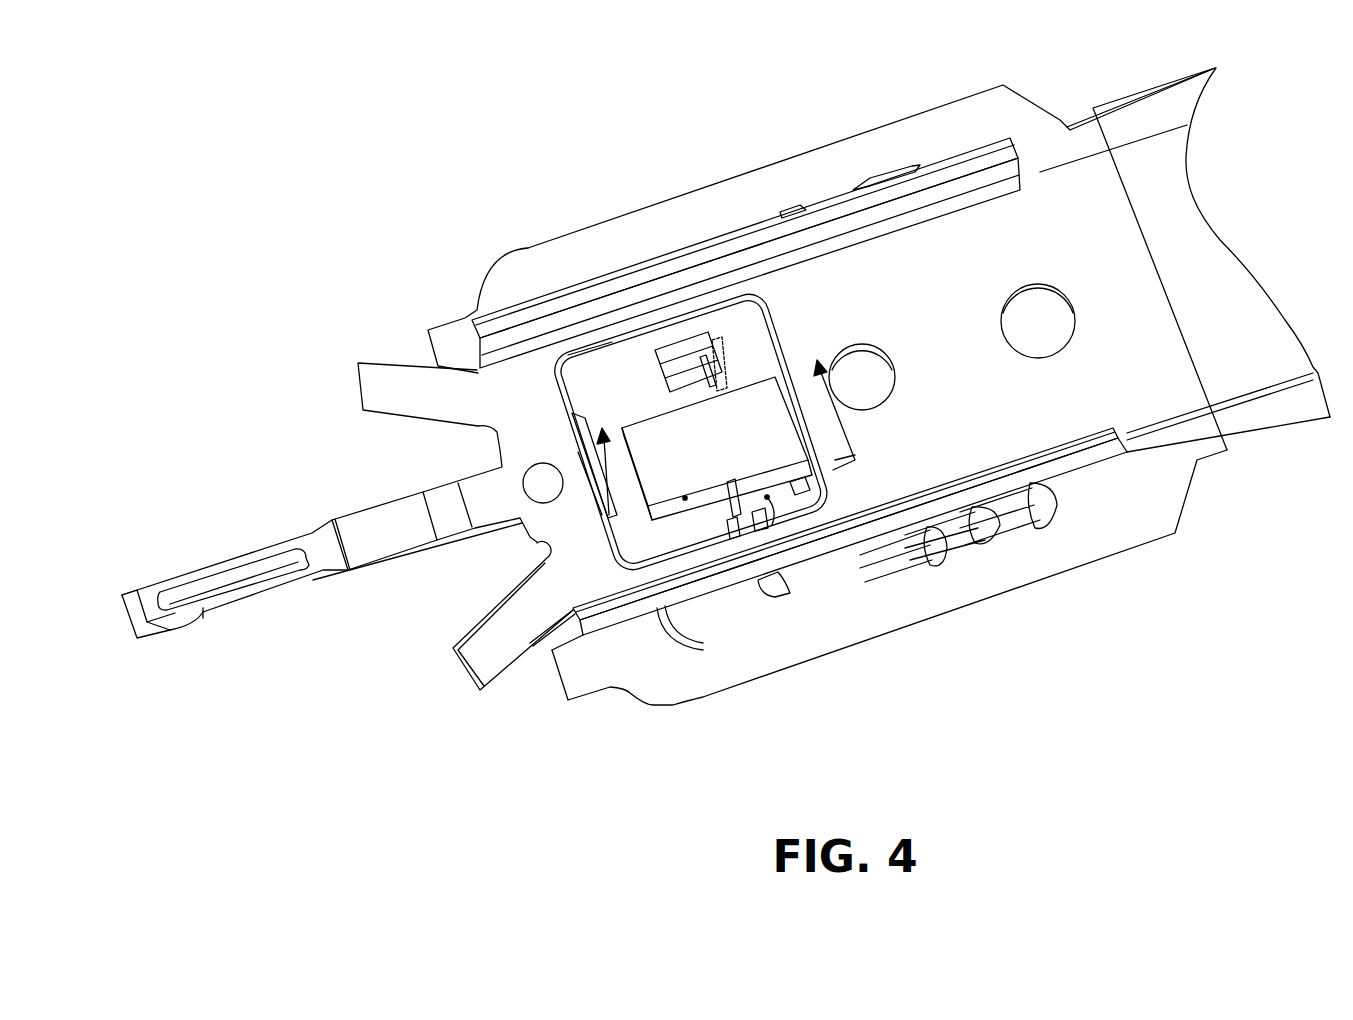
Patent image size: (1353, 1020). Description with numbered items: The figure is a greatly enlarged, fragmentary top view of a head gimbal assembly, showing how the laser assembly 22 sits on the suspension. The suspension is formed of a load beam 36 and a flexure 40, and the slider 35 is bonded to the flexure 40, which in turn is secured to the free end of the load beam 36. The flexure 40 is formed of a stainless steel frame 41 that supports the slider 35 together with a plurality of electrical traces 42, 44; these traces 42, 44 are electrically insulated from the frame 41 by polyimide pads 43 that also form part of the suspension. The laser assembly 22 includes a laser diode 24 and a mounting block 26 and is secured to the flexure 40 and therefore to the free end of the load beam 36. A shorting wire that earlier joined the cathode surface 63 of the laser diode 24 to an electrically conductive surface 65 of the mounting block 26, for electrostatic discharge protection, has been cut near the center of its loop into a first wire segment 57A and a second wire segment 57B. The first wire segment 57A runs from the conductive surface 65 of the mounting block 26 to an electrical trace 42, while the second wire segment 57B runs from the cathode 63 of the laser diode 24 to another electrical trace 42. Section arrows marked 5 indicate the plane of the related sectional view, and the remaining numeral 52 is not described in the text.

The section line 5- 5 is at (722, 421).
The laser assembly 22 is at (717, 448).
The laser diode 24 is at (752, 478).
The mounting block 26 is at (647, 420).
The slider 35 is at (757, 333).
The load beam 36 is at (1167, 165).
The flexure 40 is at (527, 247).
The stainless steel frame 41 is at (887, 627).
The electrical trace 42 is at (773, 590).
The polyimide pad 43 is at (700, 350).
The electrical trace 44 is at (710, 380).
The terminal 52 is at (707, 355).
The first wire segment 57A is at (705, 522).
The second wire segment 57B is at (797, 484).
The cathode surface 63 is at (848, 465).
The conductive surface 65 is at (685, 500).